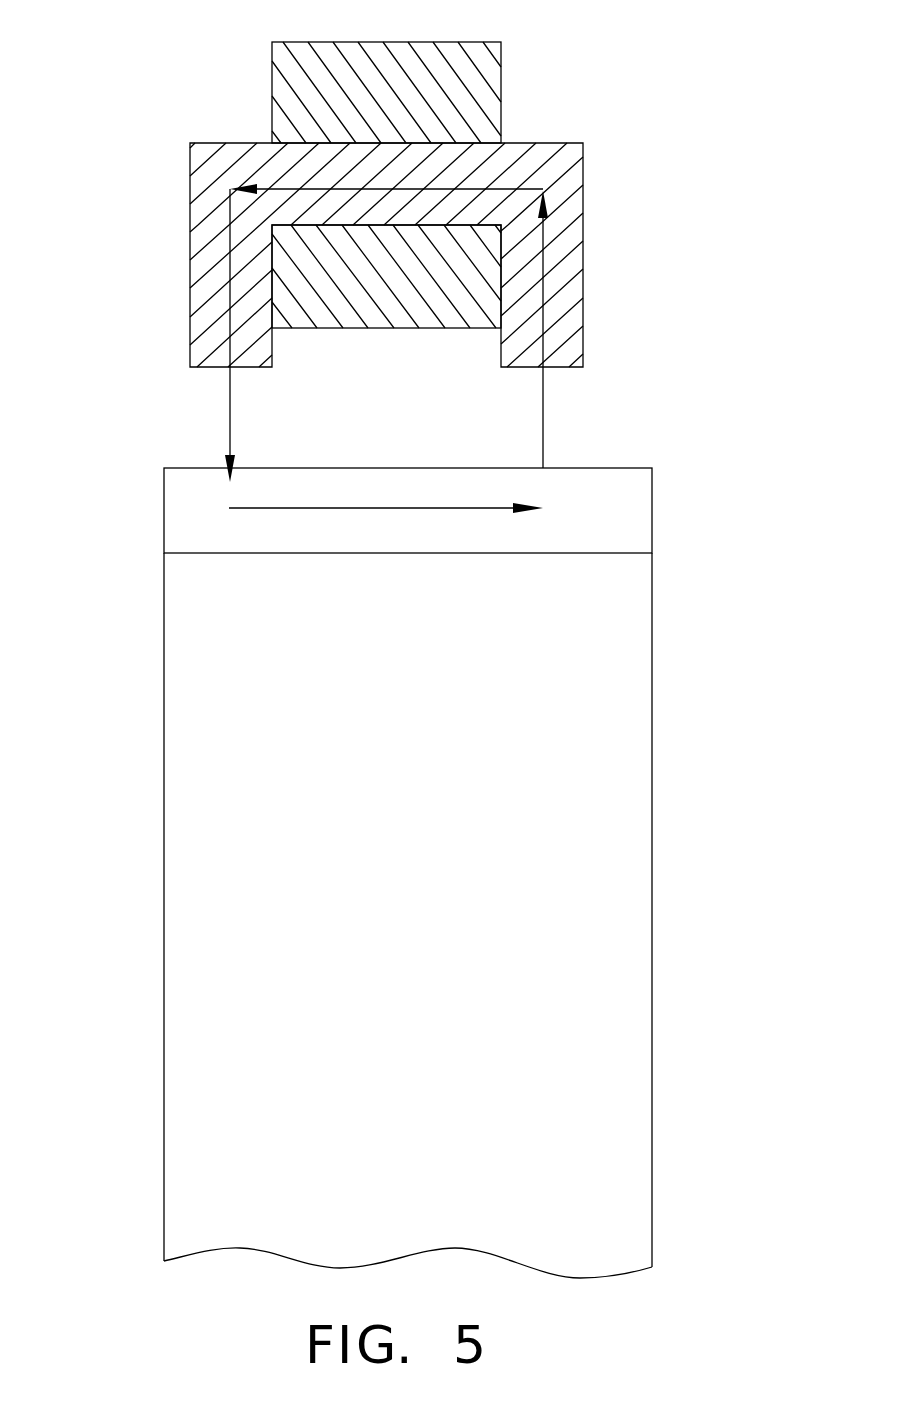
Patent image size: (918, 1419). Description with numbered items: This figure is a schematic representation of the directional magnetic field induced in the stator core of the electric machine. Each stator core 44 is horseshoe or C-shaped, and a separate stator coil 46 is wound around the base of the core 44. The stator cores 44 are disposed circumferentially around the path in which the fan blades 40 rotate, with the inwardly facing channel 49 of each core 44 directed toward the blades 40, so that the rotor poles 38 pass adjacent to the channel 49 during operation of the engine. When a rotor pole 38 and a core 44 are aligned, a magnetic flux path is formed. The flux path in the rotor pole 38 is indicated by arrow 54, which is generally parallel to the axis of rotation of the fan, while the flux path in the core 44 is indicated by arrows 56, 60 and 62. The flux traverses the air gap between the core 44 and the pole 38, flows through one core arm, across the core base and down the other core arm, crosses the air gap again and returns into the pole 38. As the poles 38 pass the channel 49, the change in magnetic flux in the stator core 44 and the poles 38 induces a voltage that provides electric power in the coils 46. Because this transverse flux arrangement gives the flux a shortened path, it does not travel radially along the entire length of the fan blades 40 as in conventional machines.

The rotor pole 38 is at (164, 508).
The fan blade 40 is at (164, 913).
The stator core 44 is at (190, 223).
The stator coil 46 is at (493, 42).
The channel 49 is at (369, 388).
The arrow indicating magnetic flux path in the rotor pole 54 is at (302, 510).
The arrow indicating flux path in the core 56 is at (545, 293).
The arrow indicating flux path in the core 60 is at (478, 188).
The arrow indicating flux path in the core 62 is at (230, 387).